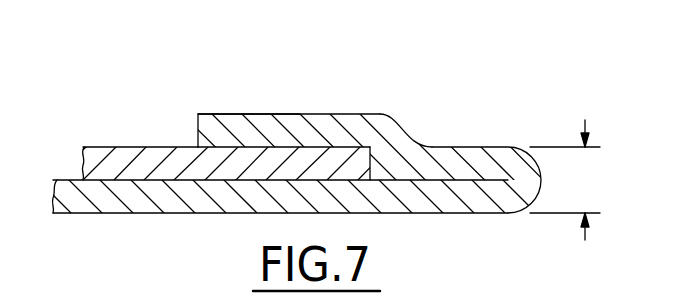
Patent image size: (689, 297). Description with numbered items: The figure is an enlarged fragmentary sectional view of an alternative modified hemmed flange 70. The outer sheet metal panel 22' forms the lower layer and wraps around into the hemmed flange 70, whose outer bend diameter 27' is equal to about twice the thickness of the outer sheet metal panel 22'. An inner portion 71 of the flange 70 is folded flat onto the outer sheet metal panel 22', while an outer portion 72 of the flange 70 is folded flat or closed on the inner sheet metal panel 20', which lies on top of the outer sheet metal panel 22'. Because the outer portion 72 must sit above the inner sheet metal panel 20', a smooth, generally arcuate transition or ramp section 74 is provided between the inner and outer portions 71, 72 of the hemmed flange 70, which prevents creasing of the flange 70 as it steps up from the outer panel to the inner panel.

The inner sheet metal panel 20' is at (221, 130).
The outer sheet metal panel 22' is at (287, 232).
The outer bend diameter 27' is at (569, 180).
The modified hemmed flange 70 is at (325, 114).
The inner portion 71 is at (468, 147).
The outer portion 72 is at (242, 120).
The transition or ramp section 74 is at (403, 133).